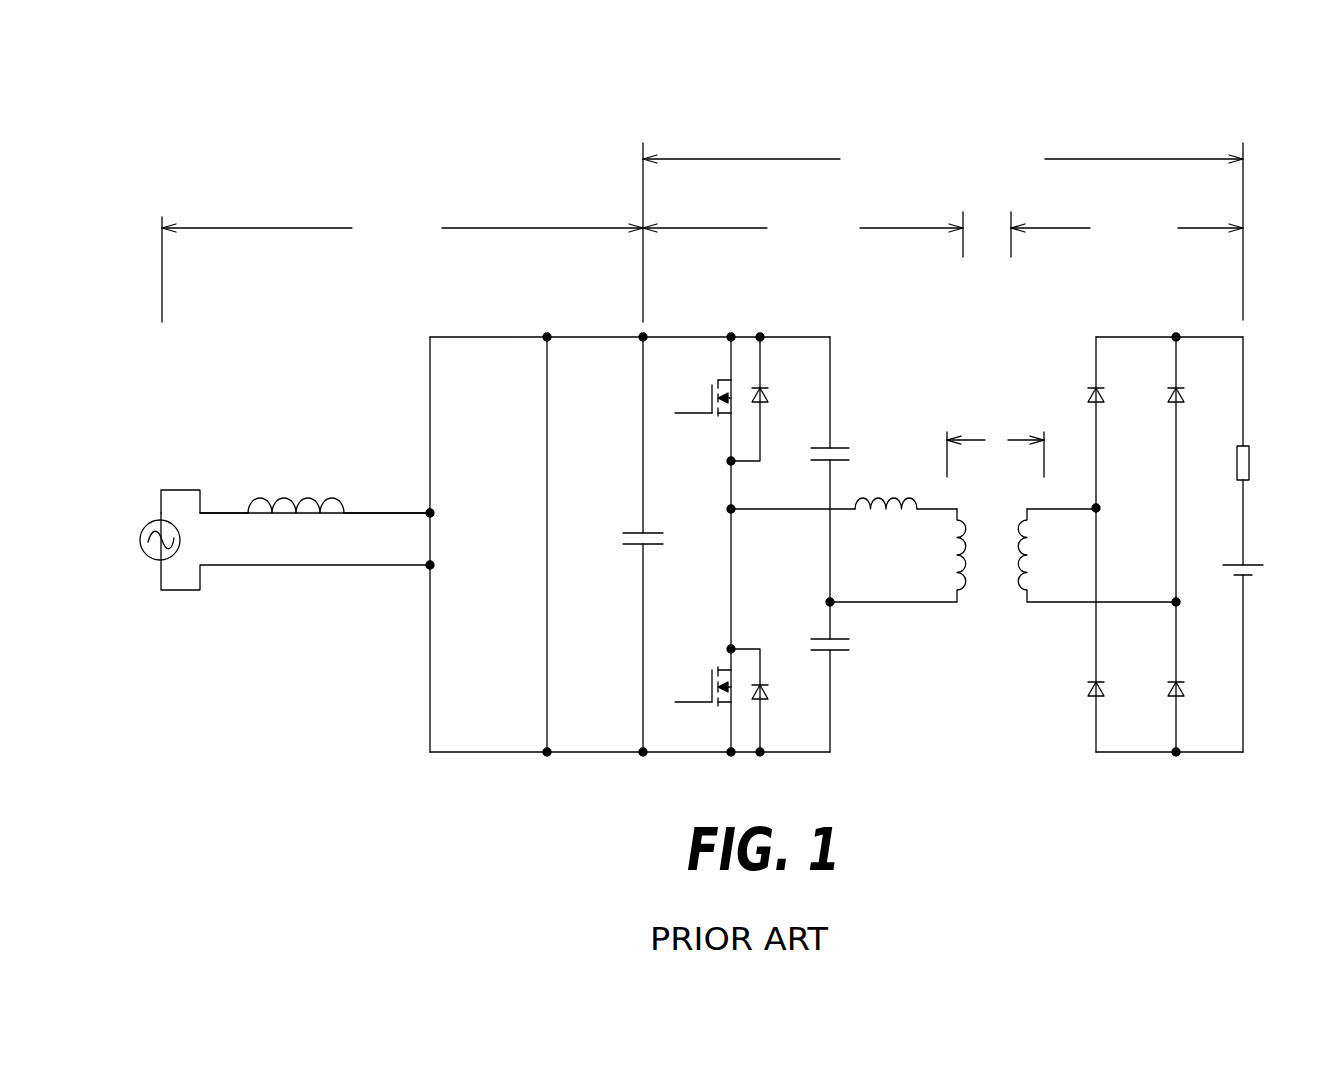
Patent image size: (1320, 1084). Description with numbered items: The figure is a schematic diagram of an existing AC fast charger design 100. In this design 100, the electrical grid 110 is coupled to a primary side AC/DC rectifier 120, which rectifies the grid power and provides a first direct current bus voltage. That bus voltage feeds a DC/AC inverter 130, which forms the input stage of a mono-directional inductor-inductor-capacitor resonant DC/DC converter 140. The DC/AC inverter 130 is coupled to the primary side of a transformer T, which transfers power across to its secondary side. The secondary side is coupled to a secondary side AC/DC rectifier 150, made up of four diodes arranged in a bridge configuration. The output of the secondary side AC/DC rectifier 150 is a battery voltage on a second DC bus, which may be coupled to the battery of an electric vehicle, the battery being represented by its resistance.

The AC fast charger design 100 is at (1185, 107).
The electrical grid 110 is at (150, 558).
The primary side AC/DC rectifier 120 is at (328, 186).
The DC/AC inverter 130 is at (800, 272).
The mono-directional LLC resonant DC/DC converter 140 is at (845, 148).
The secondary side AC/DC rectifier 150 is at (1120, 270).